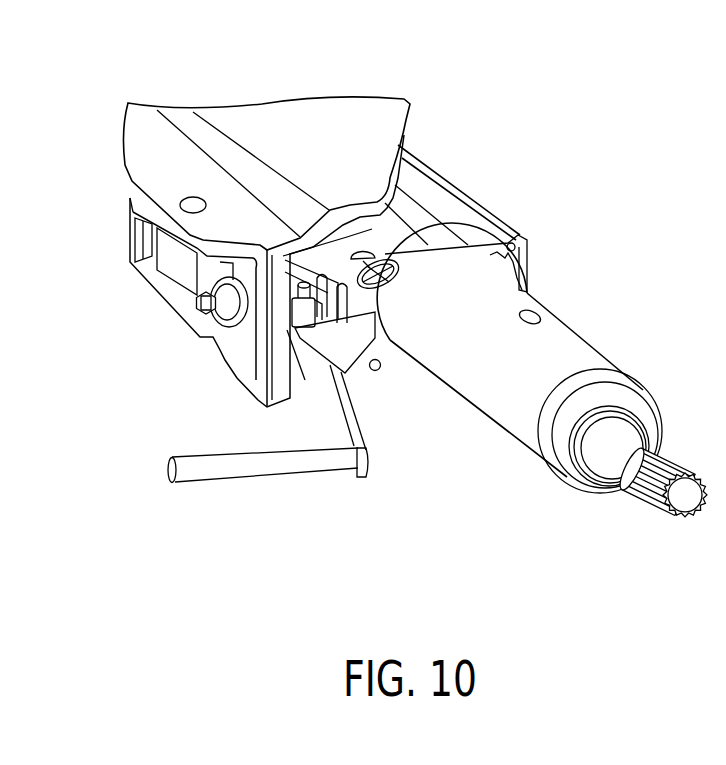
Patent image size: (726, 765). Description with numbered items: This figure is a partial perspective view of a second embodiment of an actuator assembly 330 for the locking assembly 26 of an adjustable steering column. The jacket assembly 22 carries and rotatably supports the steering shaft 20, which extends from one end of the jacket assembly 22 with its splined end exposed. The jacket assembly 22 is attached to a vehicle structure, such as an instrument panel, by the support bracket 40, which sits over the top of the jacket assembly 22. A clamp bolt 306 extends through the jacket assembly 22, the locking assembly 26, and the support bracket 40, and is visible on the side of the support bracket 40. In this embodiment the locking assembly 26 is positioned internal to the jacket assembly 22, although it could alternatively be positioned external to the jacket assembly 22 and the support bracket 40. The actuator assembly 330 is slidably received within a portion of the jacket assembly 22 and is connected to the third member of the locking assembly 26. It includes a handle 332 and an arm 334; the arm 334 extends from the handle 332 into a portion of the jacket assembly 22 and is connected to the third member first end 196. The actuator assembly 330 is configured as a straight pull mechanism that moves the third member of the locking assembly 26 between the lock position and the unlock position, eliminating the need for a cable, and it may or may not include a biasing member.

The support bracket 40 is at (302, 90).
The jacket assembly 22 is at (556, 270).
The steering shaft 20 is at (641, 514).
The locking assembly 26 is at (197, 352).
The clamp bolt 306 is at (205, 308).
The third member first end 196 is at (300, 370).
The arm 334 is at (345, 338).
The handle 332 is at (230, 467).
The actuator assembly 330 is at (388, 490).